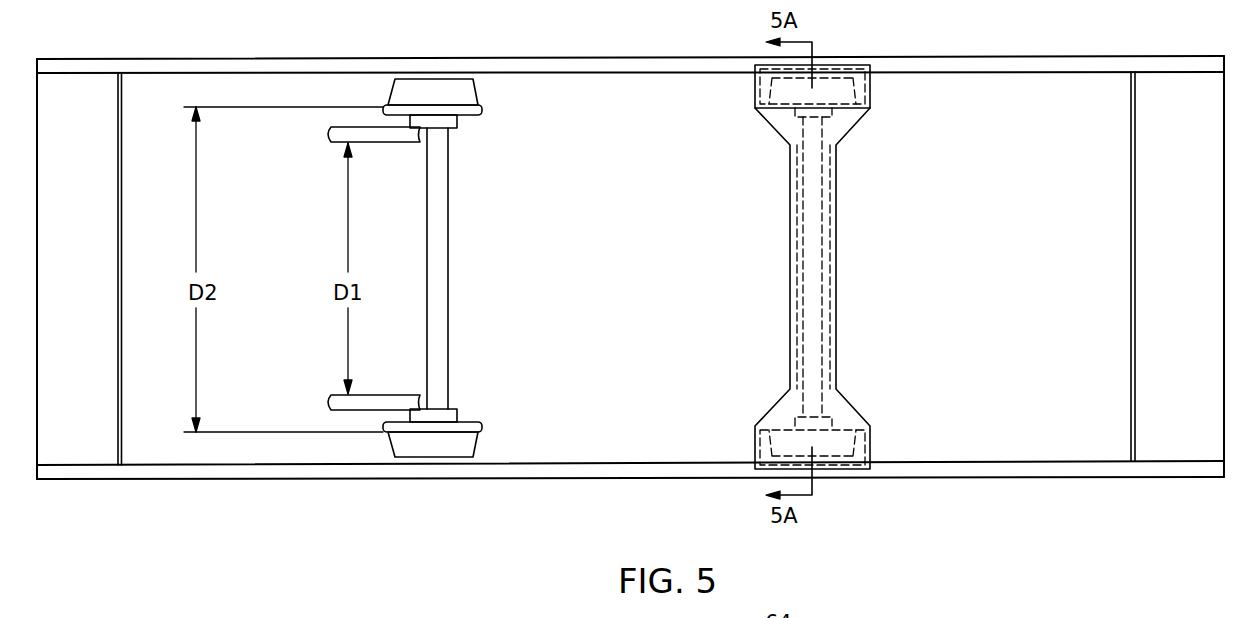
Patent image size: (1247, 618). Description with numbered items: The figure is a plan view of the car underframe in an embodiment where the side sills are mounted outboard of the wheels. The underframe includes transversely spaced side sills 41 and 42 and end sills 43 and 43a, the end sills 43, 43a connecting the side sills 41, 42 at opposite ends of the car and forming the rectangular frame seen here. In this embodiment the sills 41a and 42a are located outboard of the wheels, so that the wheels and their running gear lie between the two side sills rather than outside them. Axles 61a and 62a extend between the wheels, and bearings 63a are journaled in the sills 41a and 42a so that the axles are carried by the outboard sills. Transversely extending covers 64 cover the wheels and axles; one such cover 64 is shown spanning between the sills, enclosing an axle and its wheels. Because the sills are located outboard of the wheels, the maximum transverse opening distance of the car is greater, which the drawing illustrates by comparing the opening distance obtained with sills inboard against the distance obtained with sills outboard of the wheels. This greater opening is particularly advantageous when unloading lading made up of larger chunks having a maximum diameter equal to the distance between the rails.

The side sill 41 is at (355, 135).
The side sill 41a is at (517, 66).
The side sill 42 is at (363, 403).
The side sill 42a is at (565, 468).
The end sill 43 is at (79, 269).
The end sill 43a is at (1177, 266).
The axle 61a is at (822, 265).
The axle 62a is at (437, 273).
The bearing 63a is at (440, 75).
The cover 64 is at (837, 200).